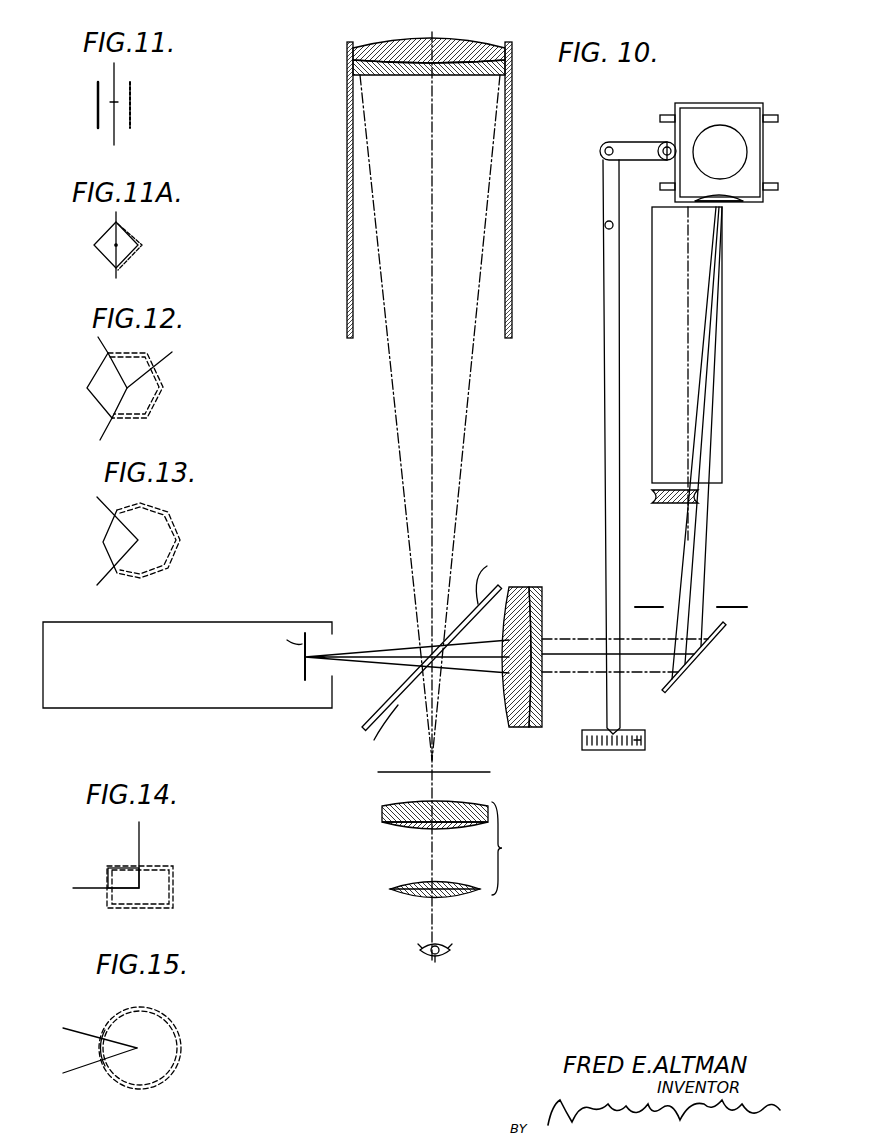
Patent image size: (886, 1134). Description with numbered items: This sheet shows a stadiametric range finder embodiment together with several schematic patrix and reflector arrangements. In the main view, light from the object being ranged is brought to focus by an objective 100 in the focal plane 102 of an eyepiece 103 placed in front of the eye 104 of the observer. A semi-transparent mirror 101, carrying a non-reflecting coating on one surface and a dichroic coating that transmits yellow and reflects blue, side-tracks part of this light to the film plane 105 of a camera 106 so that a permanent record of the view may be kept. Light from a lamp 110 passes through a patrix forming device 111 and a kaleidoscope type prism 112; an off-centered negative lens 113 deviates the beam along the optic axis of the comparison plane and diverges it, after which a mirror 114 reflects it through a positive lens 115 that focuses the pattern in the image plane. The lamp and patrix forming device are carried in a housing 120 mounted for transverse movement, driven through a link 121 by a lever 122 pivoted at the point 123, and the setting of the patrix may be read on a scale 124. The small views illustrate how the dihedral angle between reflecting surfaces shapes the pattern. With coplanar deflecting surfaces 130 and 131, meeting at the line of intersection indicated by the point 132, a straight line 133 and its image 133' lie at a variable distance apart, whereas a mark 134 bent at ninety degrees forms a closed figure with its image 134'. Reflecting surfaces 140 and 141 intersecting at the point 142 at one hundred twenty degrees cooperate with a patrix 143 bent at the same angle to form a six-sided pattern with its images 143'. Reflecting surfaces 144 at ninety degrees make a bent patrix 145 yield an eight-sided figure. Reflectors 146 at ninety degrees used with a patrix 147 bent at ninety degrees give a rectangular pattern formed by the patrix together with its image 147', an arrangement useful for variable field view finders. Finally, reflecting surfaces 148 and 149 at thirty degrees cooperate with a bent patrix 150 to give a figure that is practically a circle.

In FIG. 10, the objective 100 is at (440, 55).
In FIG. 10, the semi-transparent mirror 101 is at (408, 690).
In FIG. 10, the focal plane 102 is at (468, 772).
In FIG. 10, the eyepiece 103 is at (461, 849).
In FIG. 10, the eye 104 is at (448, 944).
In FIG. 10, the film plane 105 is at (310, 630).
In FIG. 10, the camera 106 is at (133, 708).
In FIG. 10, the lamp 110 is at (724, 125).
In FIG. 10, the patrix forming device 111 is at (730, 202).
In FIG. 10, the kaleidoscope type prism 112 is at (652, 338).
In FIG. 10, the negative lens 113 is at (700, 499).
In FIG. 10, the mirror 114 is at (710, 640).
In FIG. 10, the positive lens 115 is at (537, 606).
In FIG. 10, the housing 120 is at (698, 106).
In FIG. 10, the link 121 is at (634, 142).
In FIG. 10, the lever 122 is at (603, 284).
In FIG. 10, the pivot point 123 is at (605, 225).
In FIG. 10, the scale 124 is at (645, 740).
In FIG. 11, the deflecting surface 130 is at (118, 72).
In FIG. 11, the deflecting surface 131 is at (118, 135).
In FIG. 11, the line of intersection 132 is at (117, 103).
In FIG. 11A, the line of intersection 132 is at (118, 246).
In FIG. 11, the straight line mark 133 is at (63, 94).
In FIG. 11, the image of straight line mark 133' is at (176, 103).
In FIG. 11A, the bent mark 134 is at (90, 241).
In FIG. 11A, the image of bent mark 134' is at (154, 249).
In FIG. 12, the reflecting surface 140 is at (98, 337).
In FIG. 12, the reflecting surface 141 is at (100, 432).
In FIG. 12, the intersection point 142 is at (169, 364).
In FIG. 12, the patrix 143 is at (84, 385).
In FIG. 12, the images of patrix 143' is at (163, 385).
In FIG. 13, the reflecting surfaces 144 is at (98, 498).
In FIG. 13, the bent patrix 145 is at (103, 540).
In FIG. 14, the reflectors 146 is at (140, 841).
In FIG. 14, the patrix 147 is at (100, 866).
In FIG. 14, the image of patrix 147' is at (167, 894).
In FIG. 15, the reflecting surface 148 is at (80, 1032).
In FIG. 15, the reflecting surface 149 is at (86, 1066).
In FIG. 15, the bent patrix 150 is at (98, 1048).